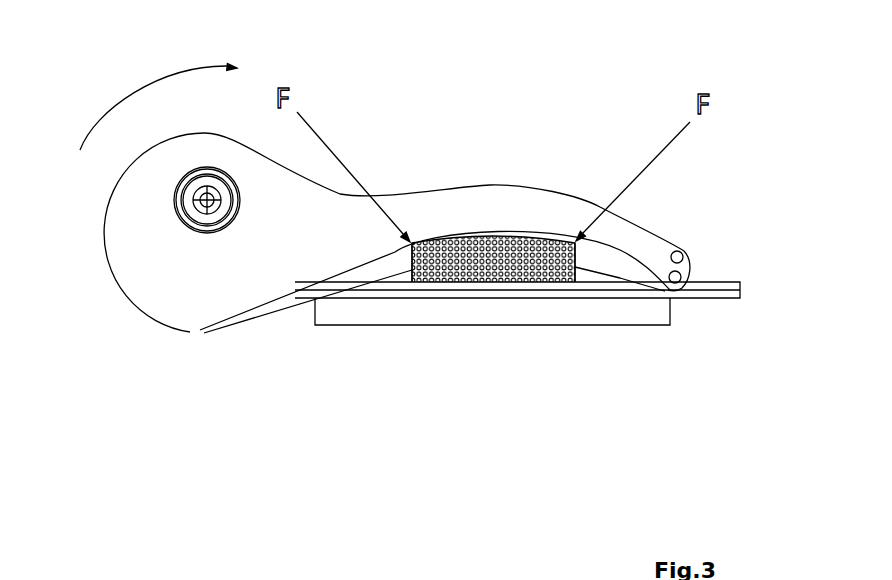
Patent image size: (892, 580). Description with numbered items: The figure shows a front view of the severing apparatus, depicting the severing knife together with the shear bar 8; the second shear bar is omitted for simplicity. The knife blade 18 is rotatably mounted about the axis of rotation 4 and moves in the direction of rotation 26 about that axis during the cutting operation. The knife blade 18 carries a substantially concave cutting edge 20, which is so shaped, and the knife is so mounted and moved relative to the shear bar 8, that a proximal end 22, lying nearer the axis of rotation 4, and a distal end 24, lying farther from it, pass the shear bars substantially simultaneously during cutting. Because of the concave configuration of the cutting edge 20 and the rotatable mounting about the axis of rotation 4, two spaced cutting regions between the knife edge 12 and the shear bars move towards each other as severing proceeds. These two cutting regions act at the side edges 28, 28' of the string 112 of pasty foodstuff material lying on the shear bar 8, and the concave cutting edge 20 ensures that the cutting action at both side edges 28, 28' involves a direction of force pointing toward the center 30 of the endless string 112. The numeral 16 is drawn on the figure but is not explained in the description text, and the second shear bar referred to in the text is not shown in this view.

The axis of rotation 4 is at (207, 200).
The shear bar 8 is at (720, 290).
The knife edge 12 is at (447, 234).
The cam body 16 is at (172, 255).
The knife blade 18 is at (523, 191).
The cutting edge 20 is at (605, 268).
The proximal end 22 is at (350, 233).
The distal end 24 is at (667, 247).
The direction of rotation 26 is at (143, 80).
The side edge of the string 28 is at (589, 333).
The side edge of the string 28' is at (424, 332).
The center of the endless string 30 is at (497, 290).
The string of pasty foodstuff material 112 is at (459, 265).